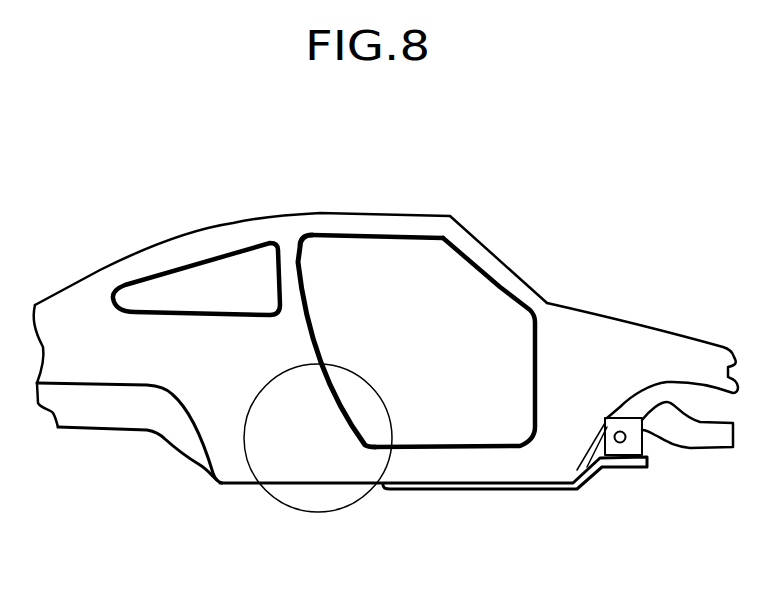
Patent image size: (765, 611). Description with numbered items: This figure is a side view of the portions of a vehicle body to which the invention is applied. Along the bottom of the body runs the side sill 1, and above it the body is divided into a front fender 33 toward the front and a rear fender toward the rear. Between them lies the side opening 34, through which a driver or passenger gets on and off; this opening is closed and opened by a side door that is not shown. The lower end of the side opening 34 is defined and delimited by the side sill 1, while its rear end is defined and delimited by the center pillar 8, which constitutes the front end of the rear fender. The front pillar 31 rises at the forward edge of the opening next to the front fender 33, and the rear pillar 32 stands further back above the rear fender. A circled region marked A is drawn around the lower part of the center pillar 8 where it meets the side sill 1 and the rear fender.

The rear pillar 32 is at (132, 260).
The front pillar 31 is at (485, 258).
The front fender 33 is at (630, 333).
The side opening 34 is at (488, 418).
The center pillar 8 is at (293, 327).
The side sill 1 is at (442, 468).
The detail area A is at (320, 513).